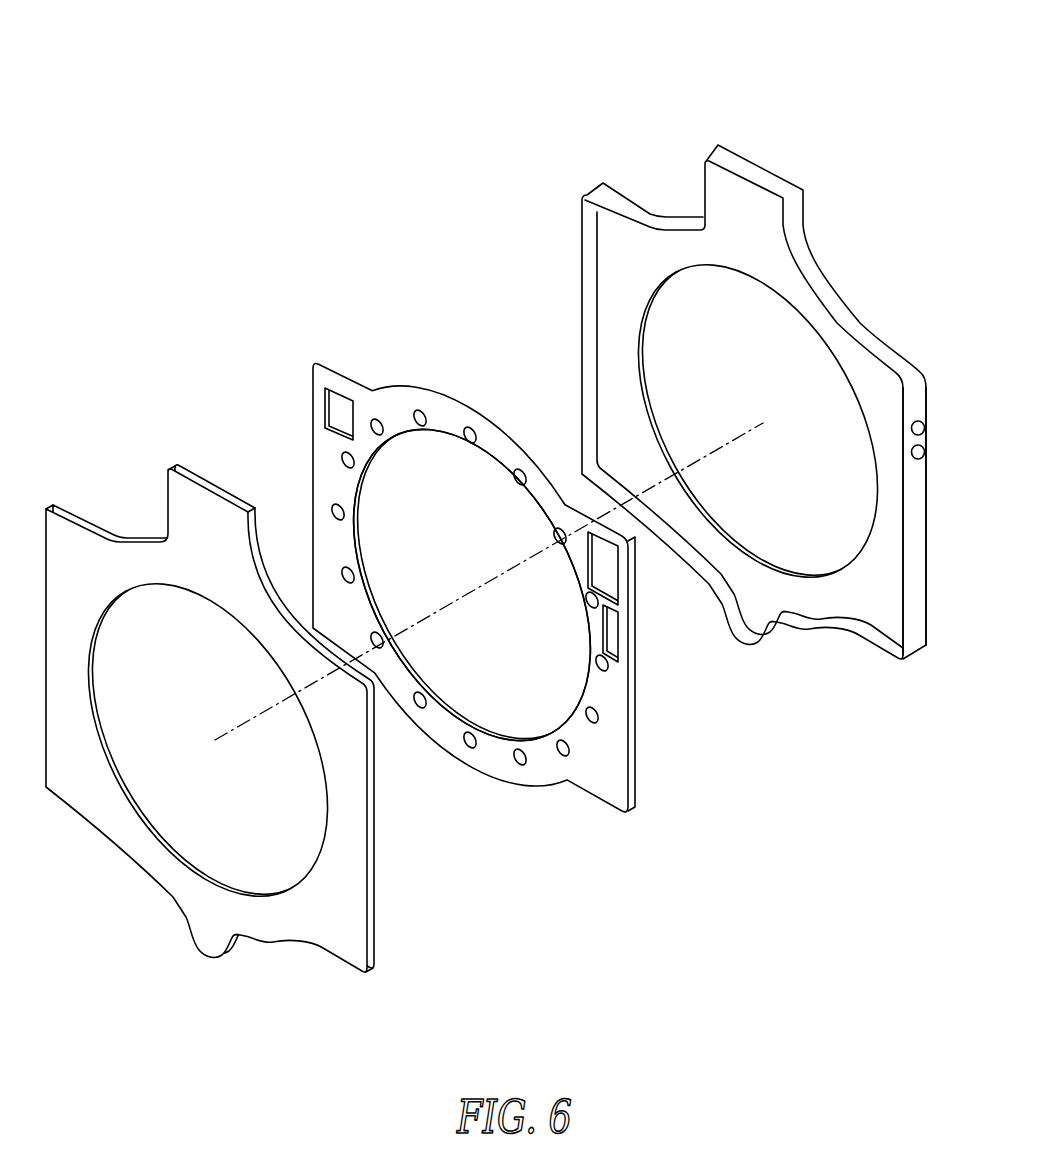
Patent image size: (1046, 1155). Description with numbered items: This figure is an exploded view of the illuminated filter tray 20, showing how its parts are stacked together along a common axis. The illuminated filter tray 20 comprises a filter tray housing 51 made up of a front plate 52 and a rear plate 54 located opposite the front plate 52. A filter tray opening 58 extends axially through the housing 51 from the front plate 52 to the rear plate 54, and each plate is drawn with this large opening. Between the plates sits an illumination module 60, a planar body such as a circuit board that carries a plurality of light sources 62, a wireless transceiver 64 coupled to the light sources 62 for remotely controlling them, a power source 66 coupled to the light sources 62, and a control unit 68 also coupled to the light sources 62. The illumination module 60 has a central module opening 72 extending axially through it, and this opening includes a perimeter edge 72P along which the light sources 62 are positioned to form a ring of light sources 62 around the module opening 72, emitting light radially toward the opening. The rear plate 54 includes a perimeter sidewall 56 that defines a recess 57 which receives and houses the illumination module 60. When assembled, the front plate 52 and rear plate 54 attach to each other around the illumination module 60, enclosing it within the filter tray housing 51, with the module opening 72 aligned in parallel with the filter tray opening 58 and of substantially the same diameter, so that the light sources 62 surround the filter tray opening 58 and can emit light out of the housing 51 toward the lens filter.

The illuminated filter tray 20 is at (278, 112).
The filter tray housing 51 is at (378, 260).
The front plate 52 is at (75, 519).
The rear plate 54 is at (900, 352).
The perimeter sidewall 56 is at (917, 507).
The recess 57 is at (875, 593).
The filter tray opening 58 is at (145, 739).
The illumination module 60 is at (345, 370).
The light sources 62 is at (421, 411).
The wireless transceiver 64 is at (325, 412).
The power source 66 is at (620, 645).
The control unit 68 is at (620, 587).
The central module opening 72 is at (465, 485).
The perimeter edge 72P is at (356, 505).